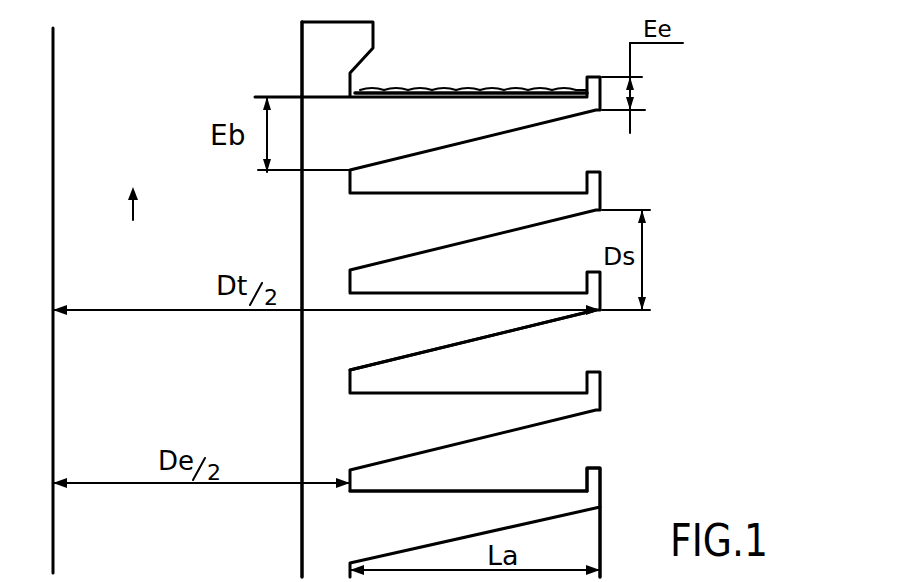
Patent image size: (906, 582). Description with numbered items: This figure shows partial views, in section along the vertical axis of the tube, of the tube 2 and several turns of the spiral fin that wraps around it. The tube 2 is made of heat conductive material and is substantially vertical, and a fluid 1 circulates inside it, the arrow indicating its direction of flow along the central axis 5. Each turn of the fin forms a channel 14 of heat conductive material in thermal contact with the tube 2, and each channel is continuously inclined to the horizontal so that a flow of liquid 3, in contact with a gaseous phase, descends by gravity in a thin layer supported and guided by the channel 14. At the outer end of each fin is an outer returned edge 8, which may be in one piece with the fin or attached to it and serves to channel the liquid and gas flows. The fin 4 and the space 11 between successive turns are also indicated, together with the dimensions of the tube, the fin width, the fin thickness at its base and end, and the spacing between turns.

The fluid 1 is at (135, 223).
The tube 2 is at (301, 536).
The flow of liquid 3 is at (528, 88).
The fin 4 is at (580, 204).
The central axis 5 is at (55, 95).
The outer returned edge 8 is at (606, 486).
The channel between fins 11 is at (556, 350).
The channel 14 is at (472, 486).